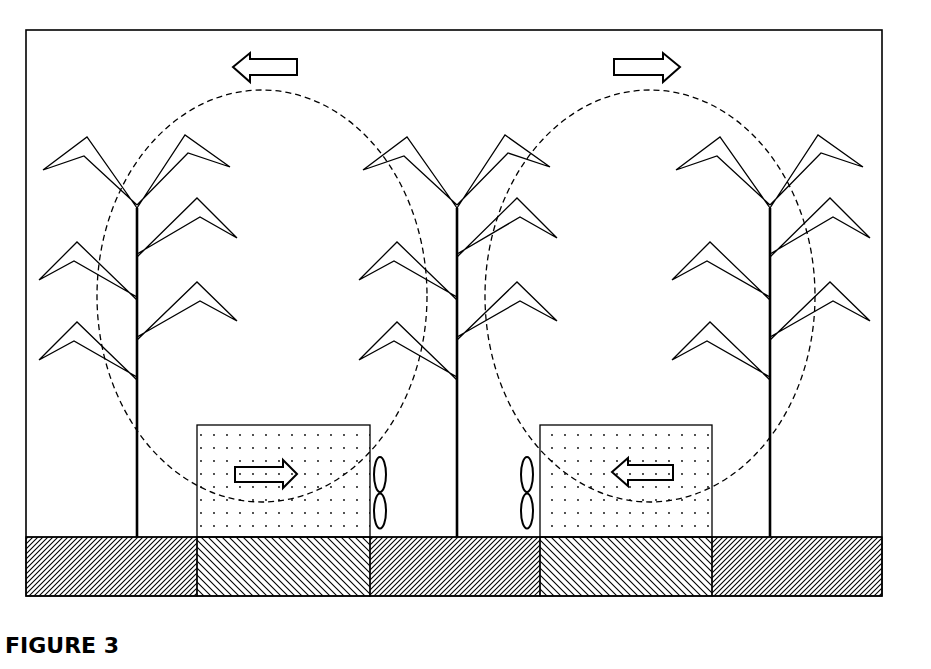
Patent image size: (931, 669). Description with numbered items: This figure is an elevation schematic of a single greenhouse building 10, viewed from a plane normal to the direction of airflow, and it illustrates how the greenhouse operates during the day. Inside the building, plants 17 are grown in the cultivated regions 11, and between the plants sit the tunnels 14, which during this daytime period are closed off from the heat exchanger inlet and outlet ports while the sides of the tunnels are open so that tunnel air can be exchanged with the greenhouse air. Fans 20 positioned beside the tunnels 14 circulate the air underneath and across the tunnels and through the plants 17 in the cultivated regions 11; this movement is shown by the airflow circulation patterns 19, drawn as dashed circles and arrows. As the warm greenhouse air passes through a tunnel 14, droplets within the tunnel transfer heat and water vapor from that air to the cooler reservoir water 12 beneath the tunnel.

The greenhouse building 10 is at (454, 313).
The cultivated regions 11 is at (78, 532).
The reservoir water 12 is at (340, 565).
The tunnels 14 is at (454, 481).
The plants 17 is at (458, 336).
The airflow circulation patterns 19 is at (456, 277).
The fans 20 is at (453, 493).